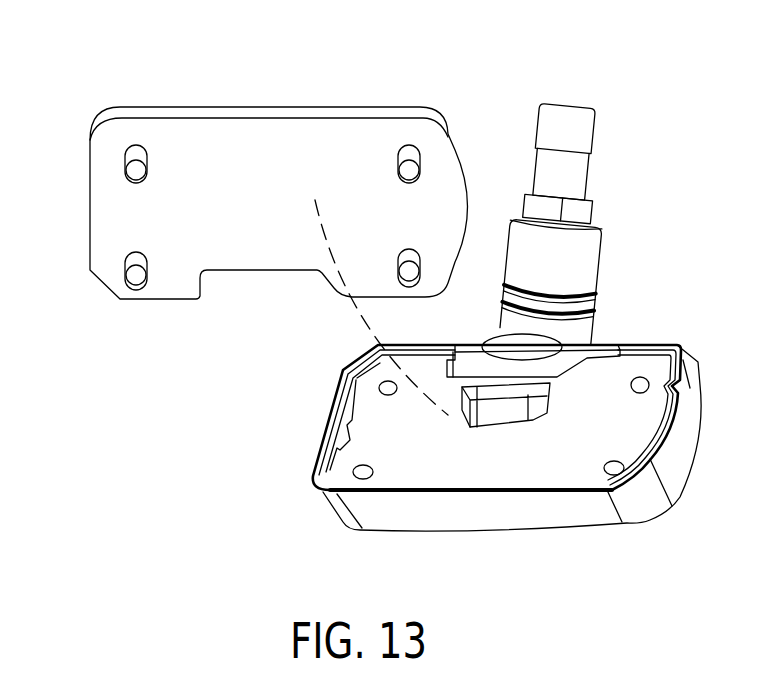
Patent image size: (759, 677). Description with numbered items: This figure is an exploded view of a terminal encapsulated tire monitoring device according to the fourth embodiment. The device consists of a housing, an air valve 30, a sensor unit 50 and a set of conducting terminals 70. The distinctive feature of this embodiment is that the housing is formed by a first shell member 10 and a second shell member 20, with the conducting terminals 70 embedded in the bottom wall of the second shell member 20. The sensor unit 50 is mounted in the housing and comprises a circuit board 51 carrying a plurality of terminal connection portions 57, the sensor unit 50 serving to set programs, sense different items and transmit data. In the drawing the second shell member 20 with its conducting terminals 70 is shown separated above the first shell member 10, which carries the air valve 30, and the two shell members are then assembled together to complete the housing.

The first shell member 10 is at (477, 466).
The second shell member 20 is at (190, 99).
The air valve 30 is at (611, 212).
The sensor unit 50 is at (452, 467).
The circuit board 51 is at (533, 473).
The terminal connection portions 57 is at (380, 390).
The conducting terminals 70 is at (128, 166).